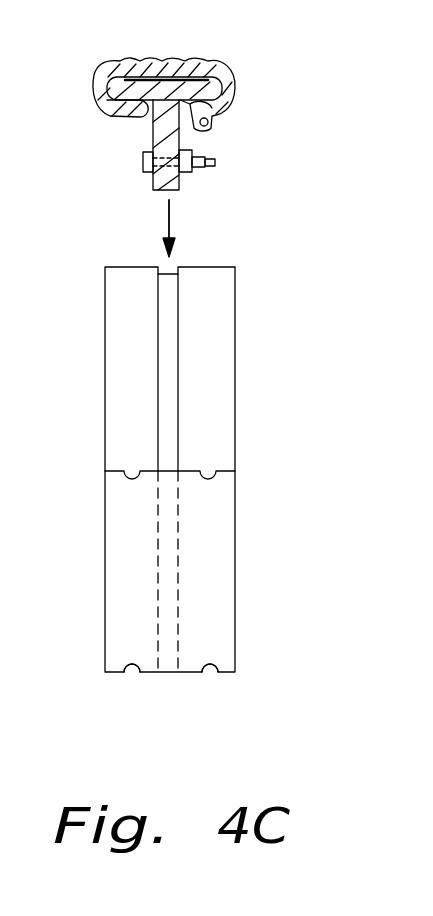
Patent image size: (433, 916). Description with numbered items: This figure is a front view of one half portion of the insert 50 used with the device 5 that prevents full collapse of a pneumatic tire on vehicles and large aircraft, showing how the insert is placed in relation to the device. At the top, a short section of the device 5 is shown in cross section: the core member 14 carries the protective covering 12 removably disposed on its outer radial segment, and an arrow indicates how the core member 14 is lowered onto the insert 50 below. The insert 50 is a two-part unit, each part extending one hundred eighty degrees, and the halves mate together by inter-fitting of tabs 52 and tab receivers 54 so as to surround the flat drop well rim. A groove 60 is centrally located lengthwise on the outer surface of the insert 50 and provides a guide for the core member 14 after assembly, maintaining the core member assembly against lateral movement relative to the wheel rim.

The device 5 is at (220, 138).
The protective covering 12 is at (222, 69).
The core member 14 is at (153, 127).
The insert 50 is at (235, 370).
The groove 60 is at (168, 424).
The tab 52 is at (208, 480).
The tab receiver 54 is at (215, 673).